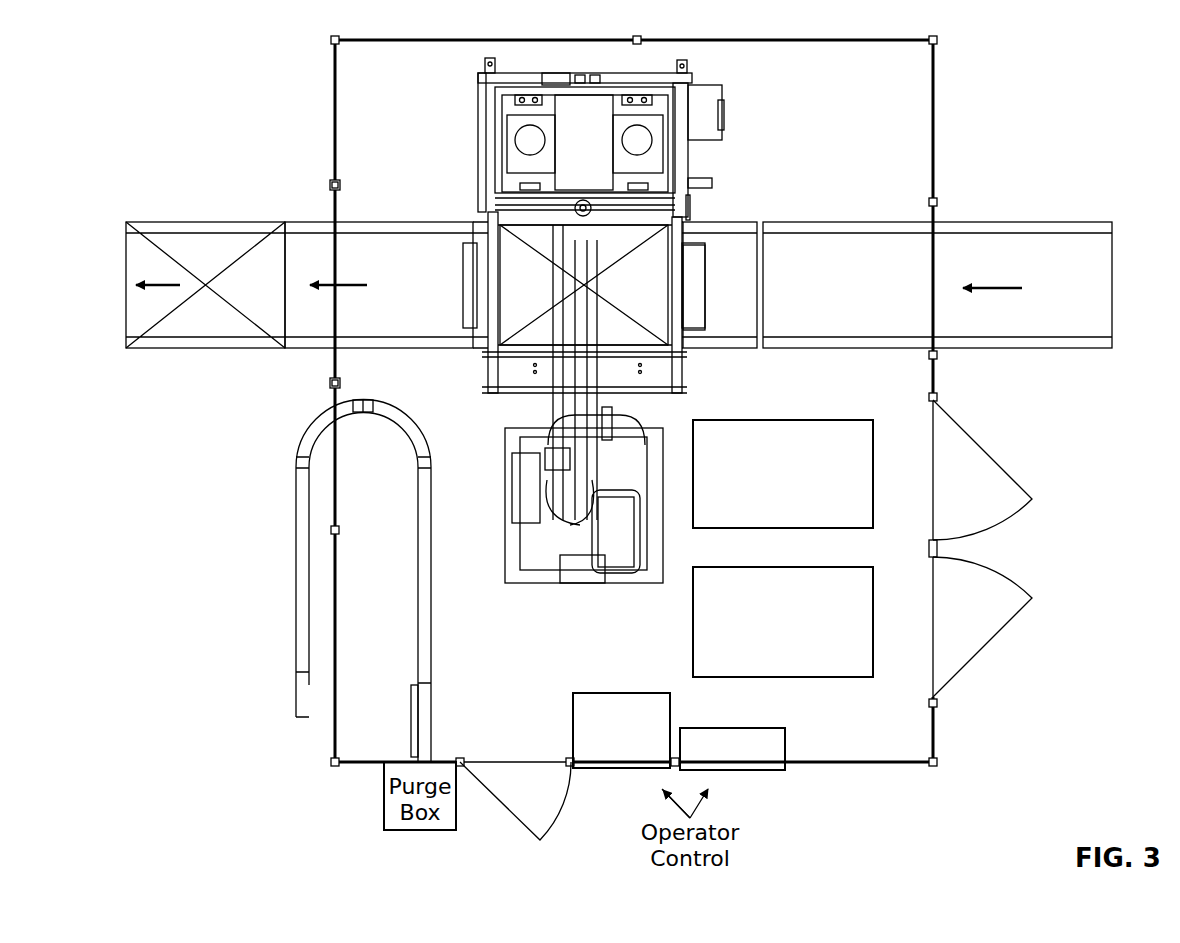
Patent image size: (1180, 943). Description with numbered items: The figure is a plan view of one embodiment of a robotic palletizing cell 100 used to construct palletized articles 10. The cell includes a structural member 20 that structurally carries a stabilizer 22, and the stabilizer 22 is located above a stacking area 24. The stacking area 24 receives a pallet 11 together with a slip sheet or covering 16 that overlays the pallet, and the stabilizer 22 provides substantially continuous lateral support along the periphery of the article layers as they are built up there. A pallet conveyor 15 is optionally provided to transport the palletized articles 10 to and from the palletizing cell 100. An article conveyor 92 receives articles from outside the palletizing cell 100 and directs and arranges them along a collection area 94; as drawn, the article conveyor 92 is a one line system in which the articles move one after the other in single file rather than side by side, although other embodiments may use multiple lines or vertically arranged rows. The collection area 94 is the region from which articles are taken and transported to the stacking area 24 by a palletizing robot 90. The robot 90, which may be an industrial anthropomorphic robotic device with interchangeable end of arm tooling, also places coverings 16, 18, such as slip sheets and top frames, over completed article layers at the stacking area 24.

The palletized articles 10 is at (177, 220).
The pallet 11 is at (697, 362).
The pallet conveyor 15 is at (325, 356).
The slip sheet or covering 16 is at (855, 475).
The covering (top frame) 18 is at (864, 605).
The structural member 20 is at (575, 73).
The stabilizer 22 is at (477, 240).
The stacking area 24 is at (704, 212).
The palletizing robot 90 is at (617, 592).
The article conveyor 92 is at (296, 595).
The collection area 94 is at (418, 612).
The robotic palletizing cell 100 is at (994, 665).